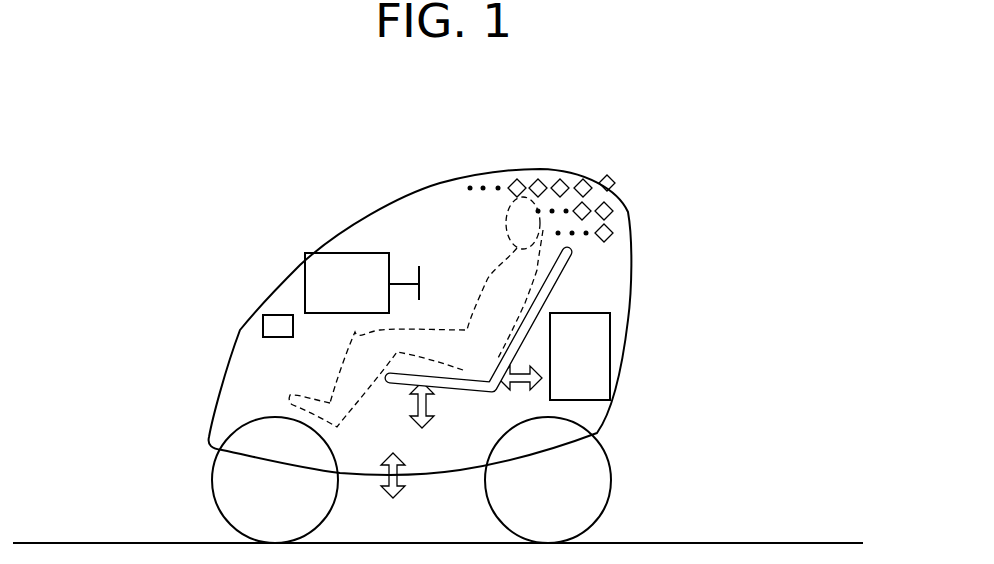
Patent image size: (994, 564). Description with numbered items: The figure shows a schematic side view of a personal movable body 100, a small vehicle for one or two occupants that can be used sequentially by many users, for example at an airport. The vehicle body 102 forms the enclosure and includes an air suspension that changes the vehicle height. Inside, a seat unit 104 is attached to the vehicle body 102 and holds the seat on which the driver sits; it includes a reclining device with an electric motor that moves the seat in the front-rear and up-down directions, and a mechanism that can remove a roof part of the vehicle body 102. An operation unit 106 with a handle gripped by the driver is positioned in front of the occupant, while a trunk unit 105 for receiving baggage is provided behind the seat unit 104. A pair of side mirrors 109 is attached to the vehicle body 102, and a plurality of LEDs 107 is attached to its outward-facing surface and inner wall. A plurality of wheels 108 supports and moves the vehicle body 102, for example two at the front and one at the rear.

The personal movable body 100 is at (526, 136).
The vehicle body 102 is at (377, 208).
The seat unit 104 is at (547, 297).
The trunk unit 105 is at (612, 355).
The operation unit 106 is at (307, 282).
The LEDs 107 is at (611, 176).
The wheels 108 is at (212, 480).
The side mirrors 109 is at (263, 325).